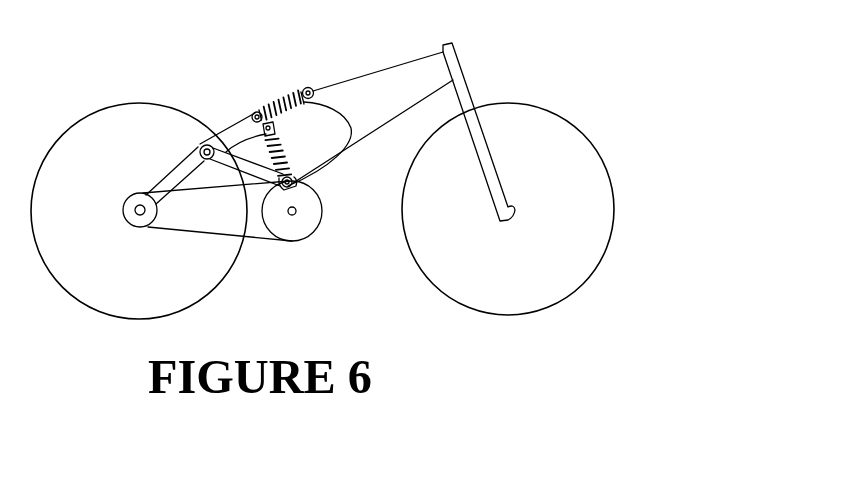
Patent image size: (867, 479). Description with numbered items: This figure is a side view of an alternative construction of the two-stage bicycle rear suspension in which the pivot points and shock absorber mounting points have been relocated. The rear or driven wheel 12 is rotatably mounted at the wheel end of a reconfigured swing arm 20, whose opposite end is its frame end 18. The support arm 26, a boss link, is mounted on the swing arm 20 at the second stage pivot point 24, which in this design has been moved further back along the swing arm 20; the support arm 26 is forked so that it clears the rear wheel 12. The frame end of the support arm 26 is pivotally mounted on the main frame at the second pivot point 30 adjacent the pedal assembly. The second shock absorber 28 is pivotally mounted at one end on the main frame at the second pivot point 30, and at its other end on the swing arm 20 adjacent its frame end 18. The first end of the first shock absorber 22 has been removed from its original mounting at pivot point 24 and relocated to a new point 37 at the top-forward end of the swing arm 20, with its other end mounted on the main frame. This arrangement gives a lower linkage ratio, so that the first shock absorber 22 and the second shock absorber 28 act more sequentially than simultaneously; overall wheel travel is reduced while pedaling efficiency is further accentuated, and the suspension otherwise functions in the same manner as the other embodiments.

The rear wheel 12 is at (221, 284).
The frame end 18 is at (217, 179).
The swing arm 20 is at (173, 169).
The first shock absorber 22 is at (293, 89).
The first pivot point 24 is at (202, 159).
The support arm 26 is at (240, 164).
The second shock absorber 28 is at (279, 141).
The second pivot point 30 is at (290, 188).
The new point 37 is at (259, 111).